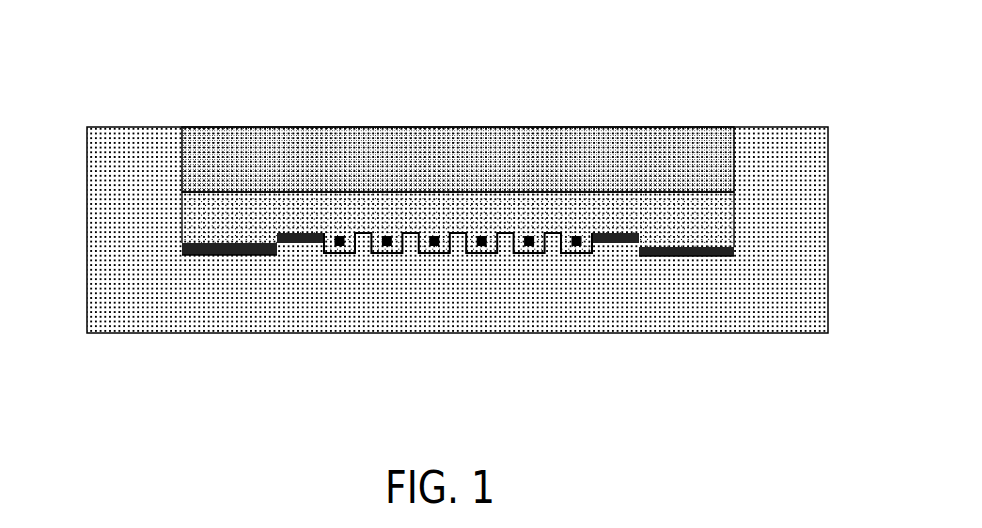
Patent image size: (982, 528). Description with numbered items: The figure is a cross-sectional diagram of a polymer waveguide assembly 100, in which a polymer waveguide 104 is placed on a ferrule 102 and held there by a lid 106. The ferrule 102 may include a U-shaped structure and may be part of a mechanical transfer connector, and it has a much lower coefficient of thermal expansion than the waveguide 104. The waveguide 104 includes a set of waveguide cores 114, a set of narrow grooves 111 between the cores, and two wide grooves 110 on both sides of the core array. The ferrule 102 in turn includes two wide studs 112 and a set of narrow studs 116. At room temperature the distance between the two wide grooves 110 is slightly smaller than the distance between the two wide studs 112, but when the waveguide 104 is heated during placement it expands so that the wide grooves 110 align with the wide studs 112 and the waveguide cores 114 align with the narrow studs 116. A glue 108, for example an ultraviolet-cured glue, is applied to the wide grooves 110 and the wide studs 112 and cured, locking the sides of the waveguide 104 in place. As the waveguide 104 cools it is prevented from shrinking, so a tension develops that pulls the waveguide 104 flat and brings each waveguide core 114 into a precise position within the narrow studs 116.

The polymer waveguide assembly 100 is at (426, 214).
The ferrule 102 is at (765, 333).
The polymer waveguide 104 is at (435, 207).
The lid 106 is at (235, 128).
The glue 108 is at (653, 256).
The wide grooves 110 is at (277, 238).
The narrow grooves 111 is at (362, 242).
The wide studs 112 is at (303, 250).
The waveguide cores 114 is at (392, 245).
The narrow studs 116 is at (458, 250).